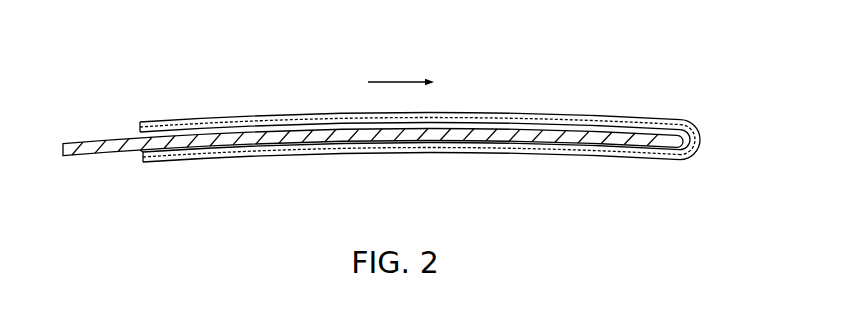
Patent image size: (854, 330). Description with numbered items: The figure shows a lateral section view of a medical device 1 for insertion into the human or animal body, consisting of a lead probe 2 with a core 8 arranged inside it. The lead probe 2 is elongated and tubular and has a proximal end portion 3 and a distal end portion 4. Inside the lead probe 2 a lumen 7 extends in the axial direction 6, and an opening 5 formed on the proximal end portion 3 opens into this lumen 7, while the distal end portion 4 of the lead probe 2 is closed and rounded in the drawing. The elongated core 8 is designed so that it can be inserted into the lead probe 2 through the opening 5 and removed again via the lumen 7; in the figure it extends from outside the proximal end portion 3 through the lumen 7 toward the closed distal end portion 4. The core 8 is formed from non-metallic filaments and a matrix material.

The medical device 1 is at (691, 106).
The lead probe 2 is at (498, 114).
The proximal end portion 3 is at (142, 172).
The distal end portion 4 is at (701, 168).
The opening 5 is at (133, 156).
The axial direction 6 is at (401, 70).
The lumen 7 is at (238, 122).
The core 8 is at (79, 147).